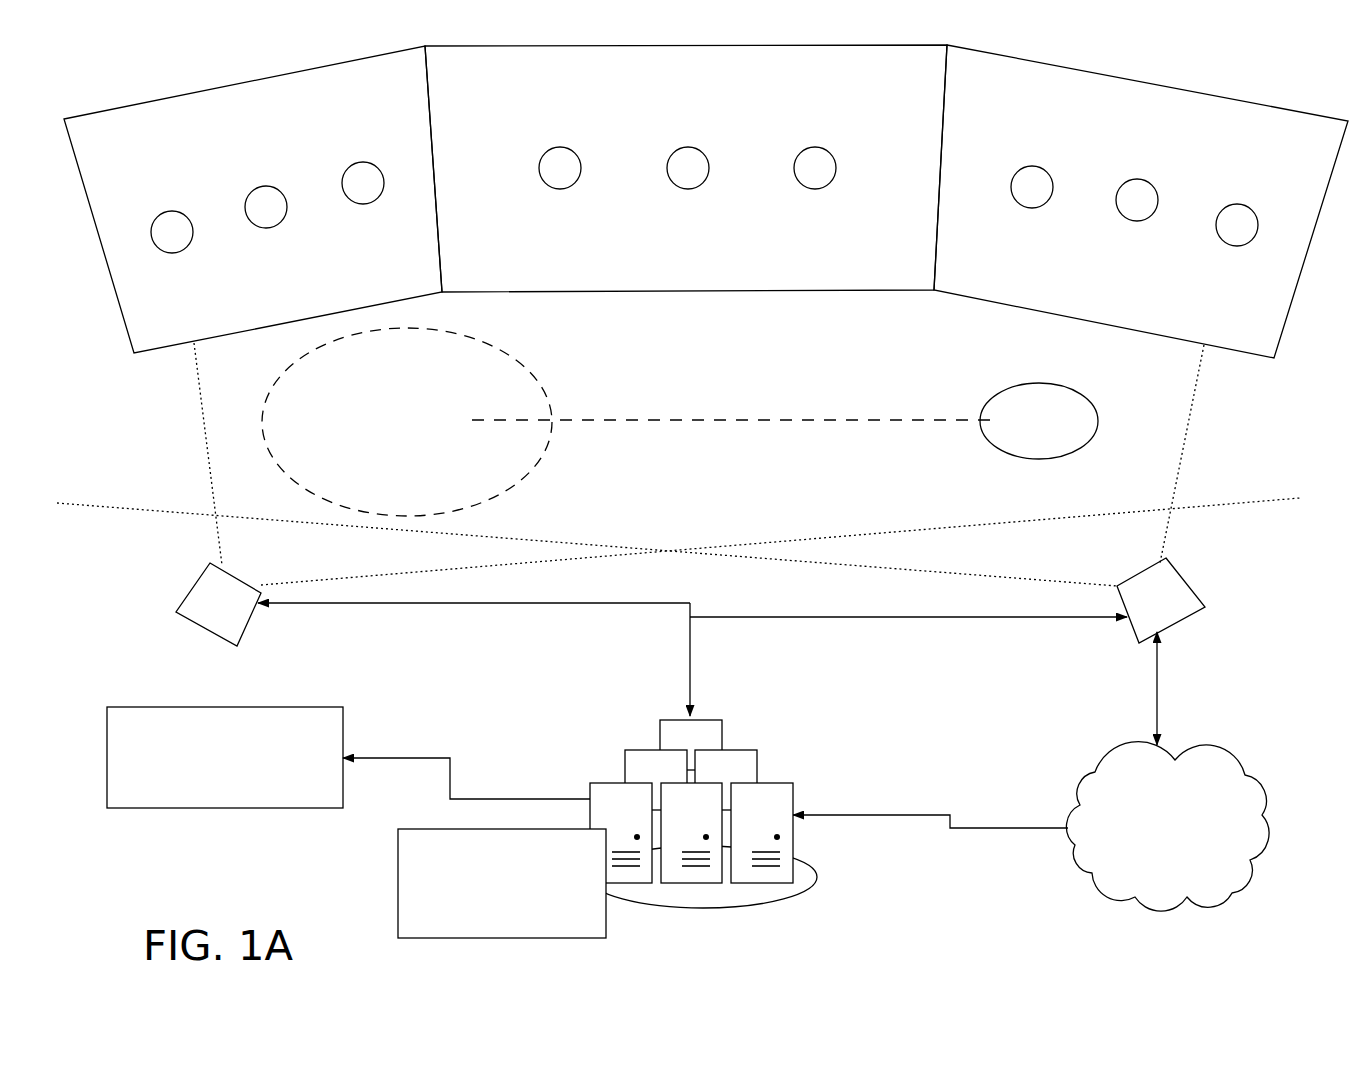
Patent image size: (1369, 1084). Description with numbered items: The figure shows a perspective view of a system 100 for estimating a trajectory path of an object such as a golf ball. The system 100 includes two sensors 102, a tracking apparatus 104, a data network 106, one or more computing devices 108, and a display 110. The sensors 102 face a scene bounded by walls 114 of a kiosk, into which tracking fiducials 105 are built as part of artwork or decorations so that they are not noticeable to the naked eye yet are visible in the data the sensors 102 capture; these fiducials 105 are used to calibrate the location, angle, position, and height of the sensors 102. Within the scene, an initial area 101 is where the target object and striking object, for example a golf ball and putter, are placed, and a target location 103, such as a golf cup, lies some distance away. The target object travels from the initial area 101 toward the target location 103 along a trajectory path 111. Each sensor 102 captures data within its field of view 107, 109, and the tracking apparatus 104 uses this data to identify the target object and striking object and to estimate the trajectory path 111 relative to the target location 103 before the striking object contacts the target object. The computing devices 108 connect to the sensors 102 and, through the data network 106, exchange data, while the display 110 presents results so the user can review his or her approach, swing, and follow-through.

The system 100 is at (128, 845).
The initial area 101 is at (391, 427).
The sensors 102 is at (188, 589).
The target location 103 is at (1024, 425).
The tracking apparatus 104 is at (486, 921).
The tracking fiducials 105 is at (668, 165).
The data network 106 is at (1152, 853).
The field of view 107 is at (226, 548).
The computing devices 108 is at (657, 726).
The field of view 109 is at (1152, 538).
The display 110 is at (209, 782).
The trajectory path 111 is at (953, 421).
The walls 114 is at (672, 78).